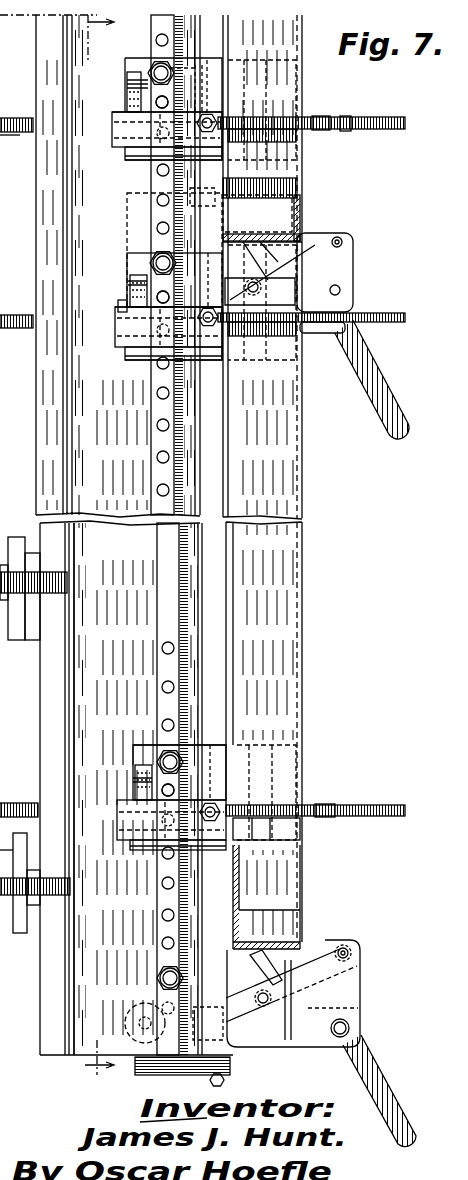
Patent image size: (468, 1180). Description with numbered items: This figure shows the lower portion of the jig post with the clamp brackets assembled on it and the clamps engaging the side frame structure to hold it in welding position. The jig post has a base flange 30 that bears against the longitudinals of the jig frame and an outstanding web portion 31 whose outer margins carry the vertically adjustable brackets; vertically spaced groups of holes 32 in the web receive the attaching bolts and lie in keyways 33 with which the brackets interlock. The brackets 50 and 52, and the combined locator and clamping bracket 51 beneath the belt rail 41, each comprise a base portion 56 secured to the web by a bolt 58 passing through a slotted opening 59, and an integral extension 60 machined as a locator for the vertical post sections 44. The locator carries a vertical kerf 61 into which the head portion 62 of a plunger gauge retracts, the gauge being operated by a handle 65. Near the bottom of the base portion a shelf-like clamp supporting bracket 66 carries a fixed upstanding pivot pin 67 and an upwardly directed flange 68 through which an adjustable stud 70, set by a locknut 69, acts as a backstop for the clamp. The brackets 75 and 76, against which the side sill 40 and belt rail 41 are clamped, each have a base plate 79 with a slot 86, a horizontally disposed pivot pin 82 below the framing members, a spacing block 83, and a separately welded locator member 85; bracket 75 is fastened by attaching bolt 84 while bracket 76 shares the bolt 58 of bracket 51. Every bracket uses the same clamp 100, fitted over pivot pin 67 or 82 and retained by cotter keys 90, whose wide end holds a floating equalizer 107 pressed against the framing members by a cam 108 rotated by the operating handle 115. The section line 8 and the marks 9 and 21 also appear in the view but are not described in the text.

The section line 8 is at (57, 553).
The rod 9 is at (10, 245).
The frame member 21 is at (261, 218).
The base flange 30 is at (30, 487).
The web portion 31 is at (75, 453).
The holes 32 is at (158, 452).
The keyways 33 is at (155, 580).
The side sill 40 is at (298, 904).
The belt rail 41 is at (300, 201).
The vertical post sections 44 is at (285, 80).
The bracket 50 is at (142, 738).
The combined locator and clamping bracket 51 is at (112, 336).
The bracket 52 is at (116, 107).
The base portion 56 is at (168, 87).
The bolt 58 is at (155, 62).
The slotted opening 59 is at (205, 58).
The extension 60 is at (290, 72).
The kerf 61 is at (298, 50).
The head portion 62 is at (292, 116).
The operating handle 65 is at (320, 117).
The clamp supporting bracket 66 is at (125, 152).
The pivot pin 67 is at (133, 78).
The flange 68 is at (112, 128).
The locknut 69 is at (218, 105).
The adjustable stud 70 is at (207, 112).
The bracket 75 is at (164, 1083).
The bracket 76 is at (120, 198).
The base plate 79 is at (205, 190).
The pivot pin 82 is at (118, 306).
The metal block 83 is at (262, 1030).
The attaching bolt 84 is at (158, 975).
The locator member 85 is at (280, 196).
The slot 86 is at (160, 985).
The cotter keys 90 is at (127, 85).
The clamp 100 is at (348, 131).
The equalizer 107 is at (343, 248).
The actuating cam 108 is at (341, 289).
The operating handle 115 is at (395, 116).